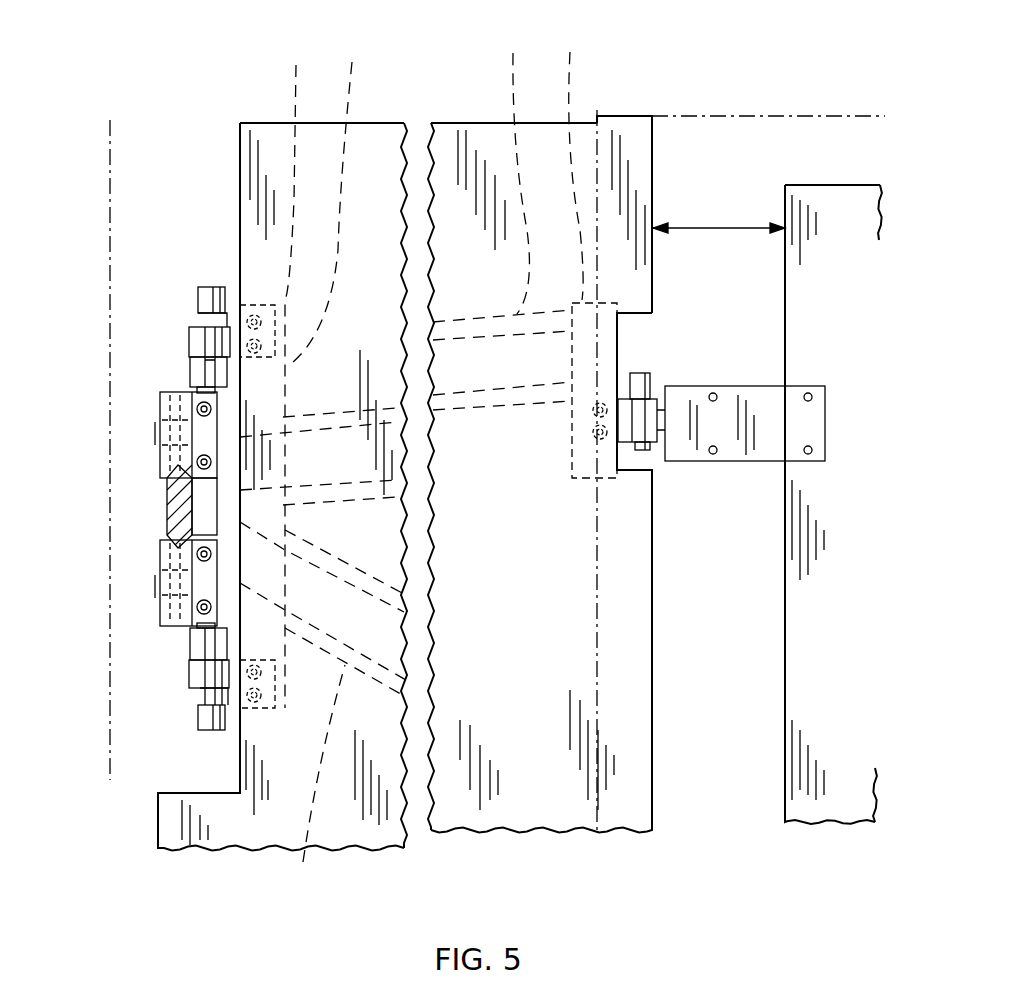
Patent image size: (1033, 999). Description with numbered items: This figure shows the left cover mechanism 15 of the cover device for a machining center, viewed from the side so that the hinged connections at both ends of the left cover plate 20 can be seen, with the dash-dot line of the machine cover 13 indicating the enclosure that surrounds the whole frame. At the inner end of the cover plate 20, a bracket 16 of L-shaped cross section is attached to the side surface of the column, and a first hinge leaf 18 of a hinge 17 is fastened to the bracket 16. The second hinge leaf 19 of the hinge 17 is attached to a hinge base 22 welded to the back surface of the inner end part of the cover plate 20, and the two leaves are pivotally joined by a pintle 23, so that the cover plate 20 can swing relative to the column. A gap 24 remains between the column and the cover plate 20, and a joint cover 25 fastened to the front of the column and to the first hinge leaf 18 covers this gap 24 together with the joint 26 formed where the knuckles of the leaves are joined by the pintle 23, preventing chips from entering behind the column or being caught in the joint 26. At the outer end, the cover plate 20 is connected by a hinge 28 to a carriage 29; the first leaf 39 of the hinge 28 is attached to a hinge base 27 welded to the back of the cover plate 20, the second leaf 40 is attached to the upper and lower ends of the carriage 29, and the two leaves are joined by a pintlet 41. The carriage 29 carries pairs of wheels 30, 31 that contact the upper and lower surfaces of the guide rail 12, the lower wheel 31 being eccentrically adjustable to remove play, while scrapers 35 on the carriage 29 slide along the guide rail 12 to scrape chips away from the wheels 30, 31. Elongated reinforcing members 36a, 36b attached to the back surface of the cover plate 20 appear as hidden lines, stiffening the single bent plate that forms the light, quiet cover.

The guide rail 12 is at (173, 493).
The machine cover 13 is at (113, 167).
The cover mechanism 15 is at (252, 112).
The bracket 16 is at (847, 205).
The hinge 17 is at (758, 370).
The first hinge leaf 18 is at (818, 423).
The second hinge leaf 19 is at (580, 437).
The left cover plate 20 is at (450, 123).
The hinge base 22 is at (605, 164).
The pintle 23 is at (652, 375).
The gap 24 is at (710, 227).
The joint cover 25 is at (600, 113).
The joint 26 is at (665, 472).
The hinge base 27 is at (335, 194).
The hinge 28 is at (197, 273).
The carriage 29 is at (177, 528).
The wheel 30 is at (157, 423).
The wheel 31 is at (157, 600).
The scraper 35 is at (187, 392).
The reinforcing member 36a is at (515, 165).
The reinforcing member 36b is at (317, 782).
The first leaf 39 is at (297, 368).
The second leaf 40 is at (197, 360).
The pintlet 41 is at (218, 287).